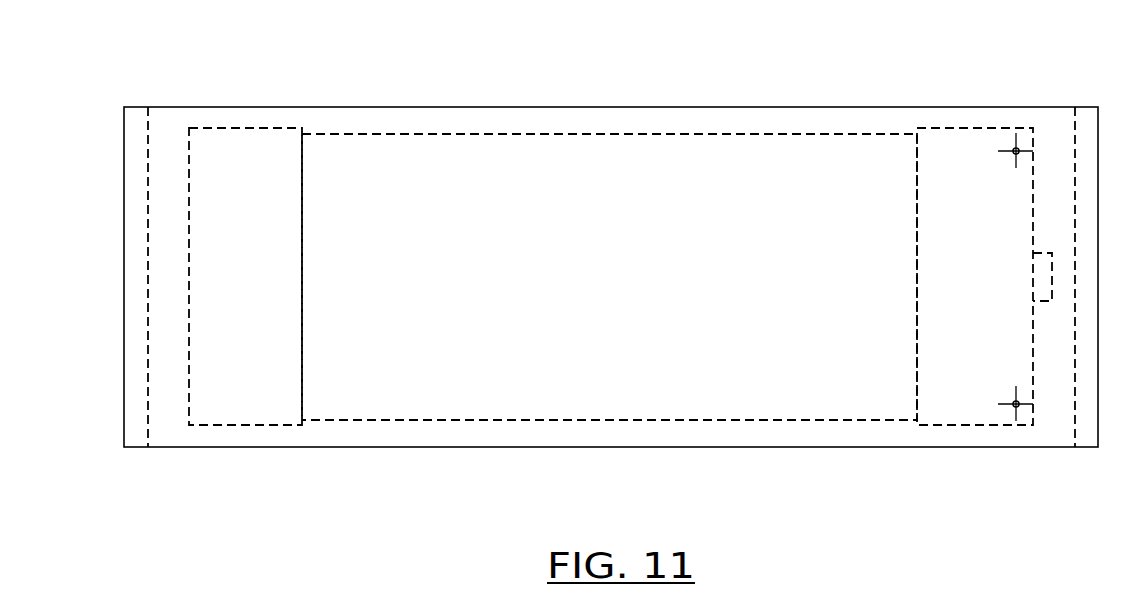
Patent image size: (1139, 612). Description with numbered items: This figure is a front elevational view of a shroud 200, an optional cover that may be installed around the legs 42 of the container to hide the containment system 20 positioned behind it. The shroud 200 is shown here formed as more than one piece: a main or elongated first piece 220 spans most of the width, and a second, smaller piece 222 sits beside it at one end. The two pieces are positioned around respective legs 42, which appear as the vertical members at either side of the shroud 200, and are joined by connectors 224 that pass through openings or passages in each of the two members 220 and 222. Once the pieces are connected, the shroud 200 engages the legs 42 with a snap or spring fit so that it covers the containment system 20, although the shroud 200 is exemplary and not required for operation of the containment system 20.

The shroud 200 is at (447, 492).
The legs 42 is at (137, 127).
The containment system 20 is at (343, 165).
The elongated first piece 220 is at (569, 195).
The second piece 222 is at (937, 127).
The connectors 224 is at (1013, 150).